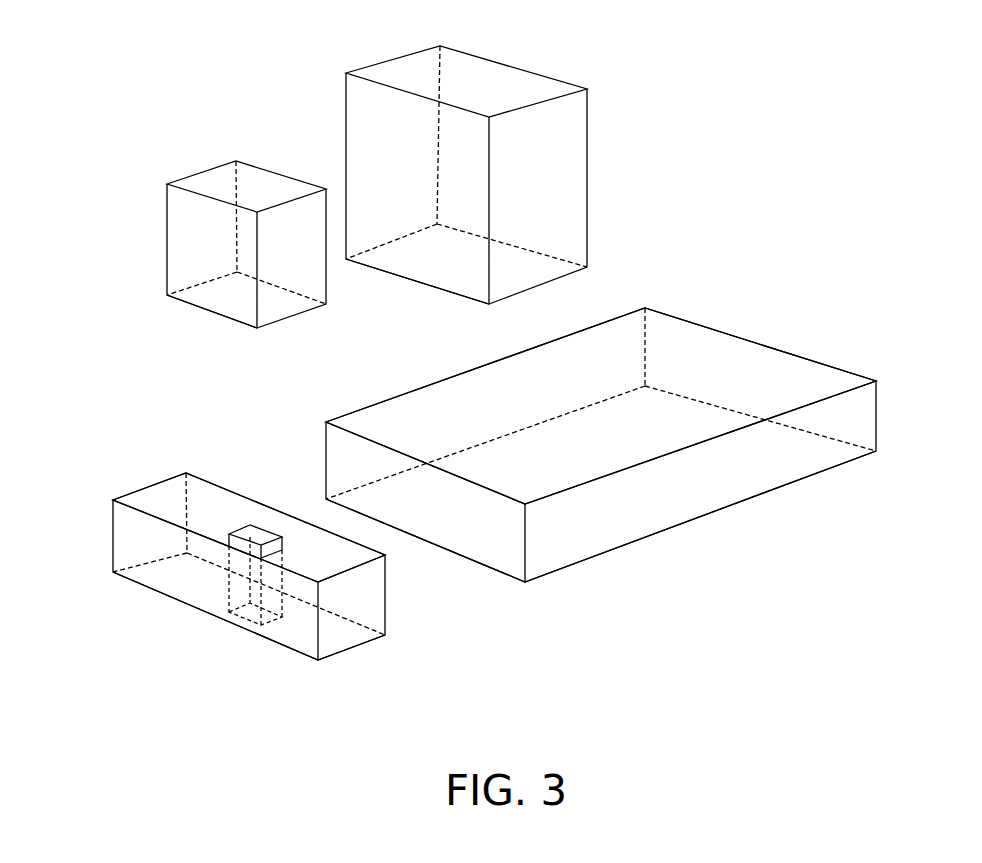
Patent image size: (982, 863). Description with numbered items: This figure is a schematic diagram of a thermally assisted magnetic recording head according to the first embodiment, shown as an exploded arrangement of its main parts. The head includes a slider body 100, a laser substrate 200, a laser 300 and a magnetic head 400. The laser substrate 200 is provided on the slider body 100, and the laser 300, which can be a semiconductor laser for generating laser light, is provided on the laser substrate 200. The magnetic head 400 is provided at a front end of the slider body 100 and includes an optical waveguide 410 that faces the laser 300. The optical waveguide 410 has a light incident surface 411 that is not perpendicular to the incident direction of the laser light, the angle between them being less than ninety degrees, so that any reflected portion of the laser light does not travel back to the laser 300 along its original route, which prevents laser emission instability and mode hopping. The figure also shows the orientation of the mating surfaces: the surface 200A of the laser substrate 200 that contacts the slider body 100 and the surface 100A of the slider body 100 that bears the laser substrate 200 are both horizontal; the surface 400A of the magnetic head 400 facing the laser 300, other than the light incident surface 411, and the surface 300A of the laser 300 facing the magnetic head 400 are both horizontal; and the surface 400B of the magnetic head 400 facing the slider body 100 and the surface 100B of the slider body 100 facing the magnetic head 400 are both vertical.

The slider body 100 is at (786, 349).
The surface of the slider body bearing the laser substrate 100A is at (684, 346).
The surface of the slider body facing the magnetic head 100B is at (483, 533).
The laser substrate 200 is at (398, 72).
The surface of the laser substrate contacting the slider body 200A is at (420, 280).
The laser 300 is at (207, 183).
The surface of the laser facing the magnetic head 300A is at (202, 308).
The magnetic head 400 is at (175, 574).
The surface of the magnetic head facing the laser 400A is at (173, 502).
The surface of the magnetic head facing the slider body 400B is at (388, 588).
The optical waveguide 410 is at (266, 528).
The light incident surface 411 is at (242, 528).